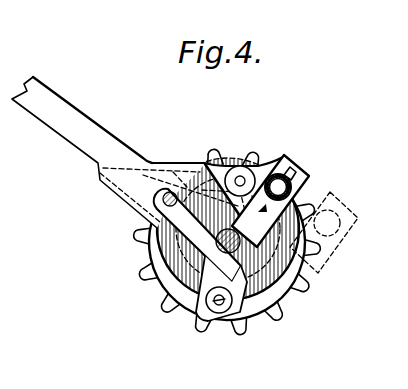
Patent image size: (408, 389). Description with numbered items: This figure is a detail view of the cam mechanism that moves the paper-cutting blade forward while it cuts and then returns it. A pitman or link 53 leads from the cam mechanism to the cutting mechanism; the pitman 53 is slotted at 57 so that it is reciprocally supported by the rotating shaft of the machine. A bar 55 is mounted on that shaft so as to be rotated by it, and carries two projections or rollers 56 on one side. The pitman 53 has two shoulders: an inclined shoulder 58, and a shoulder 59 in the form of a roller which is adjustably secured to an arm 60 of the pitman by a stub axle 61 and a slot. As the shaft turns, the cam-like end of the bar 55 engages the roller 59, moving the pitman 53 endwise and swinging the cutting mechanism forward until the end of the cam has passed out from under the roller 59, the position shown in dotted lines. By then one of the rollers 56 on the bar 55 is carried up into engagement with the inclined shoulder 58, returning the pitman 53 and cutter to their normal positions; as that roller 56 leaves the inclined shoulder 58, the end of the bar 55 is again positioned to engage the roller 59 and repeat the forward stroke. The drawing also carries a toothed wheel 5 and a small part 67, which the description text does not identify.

The ratchet wheel 5 is at (248, 252).
The pitman 53 is at (86, 126).
The bar 55 is at (198, 318).
The rollers 56 is at (242, 166).
The slot 57 is at (172, 247).
The inclined shoulder 58 is at (173, 162).
The roller shoulder 59 is at (297, 178).
The arm 60 is at (296, 180).
The stub axle 61 is at (325, 186).
The lug 67 is at (287, 173).